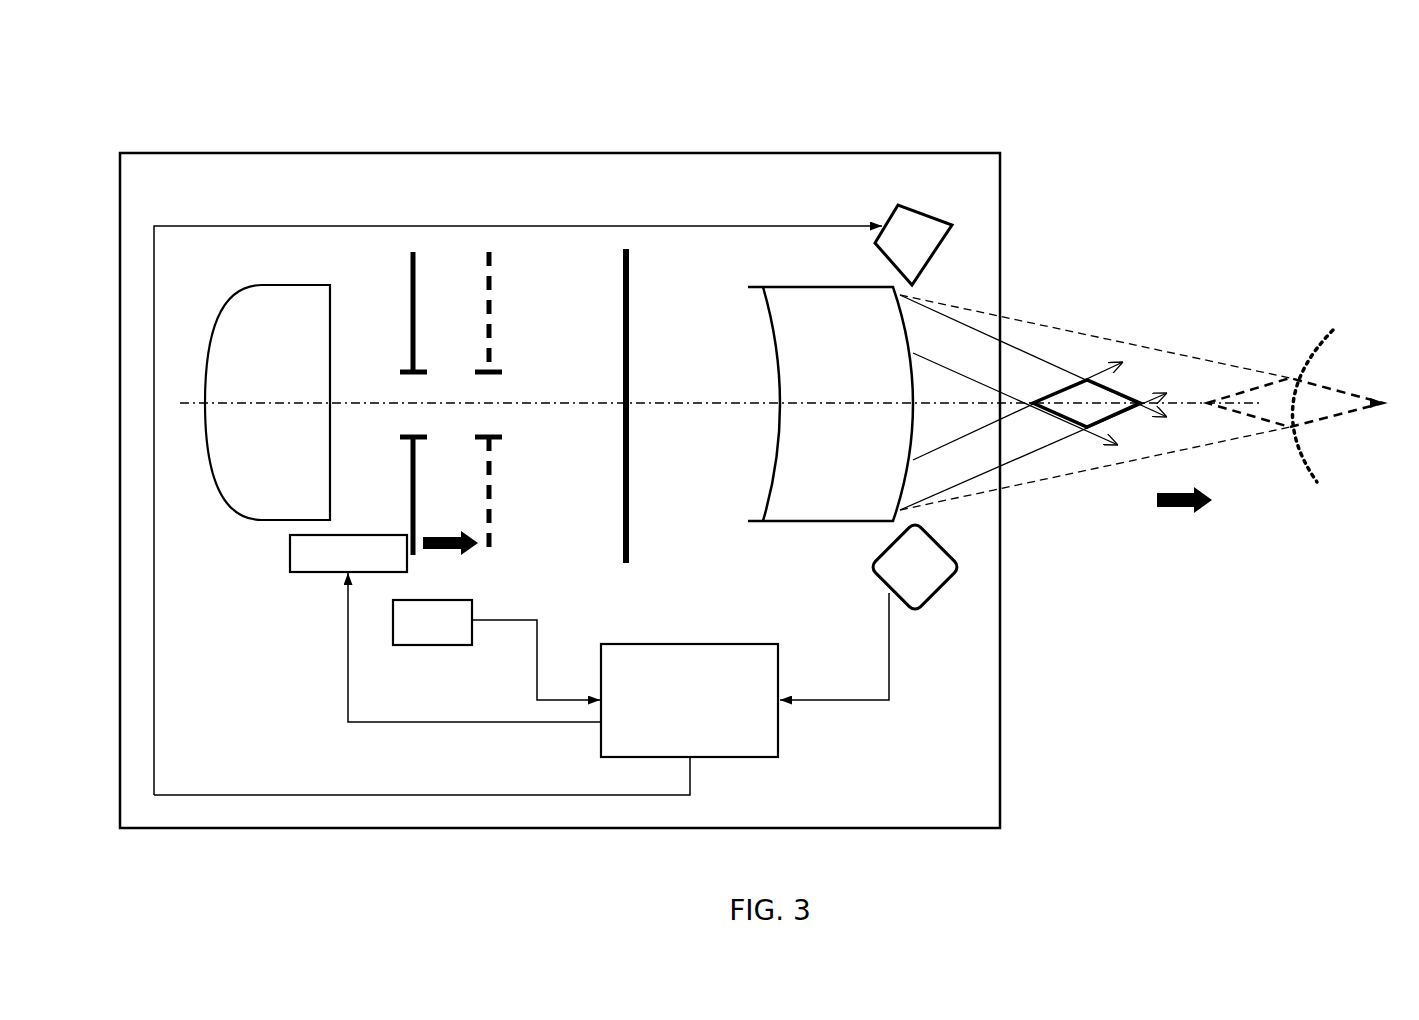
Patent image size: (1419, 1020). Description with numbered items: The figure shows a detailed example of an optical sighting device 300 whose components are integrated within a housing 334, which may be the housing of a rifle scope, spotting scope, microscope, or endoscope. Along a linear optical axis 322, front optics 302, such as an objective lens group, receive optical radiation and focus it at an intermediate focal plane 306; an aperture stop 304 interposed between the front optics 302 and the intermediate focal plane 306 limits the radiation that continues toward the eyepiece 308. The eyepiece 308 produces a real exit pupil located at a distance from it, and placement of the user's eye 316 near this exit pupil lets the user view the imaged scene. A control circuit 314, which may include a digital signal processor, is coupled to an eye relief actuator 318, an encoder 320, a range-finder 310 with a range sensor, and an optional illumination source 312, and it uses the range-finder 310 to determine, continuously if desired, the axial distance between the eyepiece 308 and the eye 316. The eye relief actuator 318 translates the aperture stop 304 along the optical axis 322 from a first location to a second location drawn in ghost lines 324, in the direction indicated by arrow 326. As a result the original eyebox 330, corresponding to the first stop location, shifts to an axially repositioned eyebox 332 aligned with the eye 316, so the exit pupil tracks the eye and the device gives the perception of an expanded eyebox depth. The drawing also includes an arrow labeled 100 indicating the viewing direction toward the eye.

The optical sighting device 300 is at (242, 87).
The front optics 302 is at (232, 502).
The aperture stop 304 is at (403, 238).
The intermediate focal plane 306 is at (610, 332).
The eyepiece 308 is at (835, 285).
The range-finder 310 is at (943, 592).
The illumination source 312 is at (923, 210).
The control circuit 314 is at (780, 740).
The user's eye 316 is at (1324, 406).
The eye relief actuator 318 is at (302, 575).
The encoder 320 is at (465, 647).
The optical axis 322 is at (700, 402).
The second location of aperture stop 324 is at (490, 238).
The arrow indicating direction of aperture stop translation 326 is at (450, 531).
The original eyebox 330 is at (1078, 360).
The axially repositioned eyebox 332 is at (1288, 358).
The housing 334 is at (677, 152).
The viewing direction 100 is at (1183, 510).